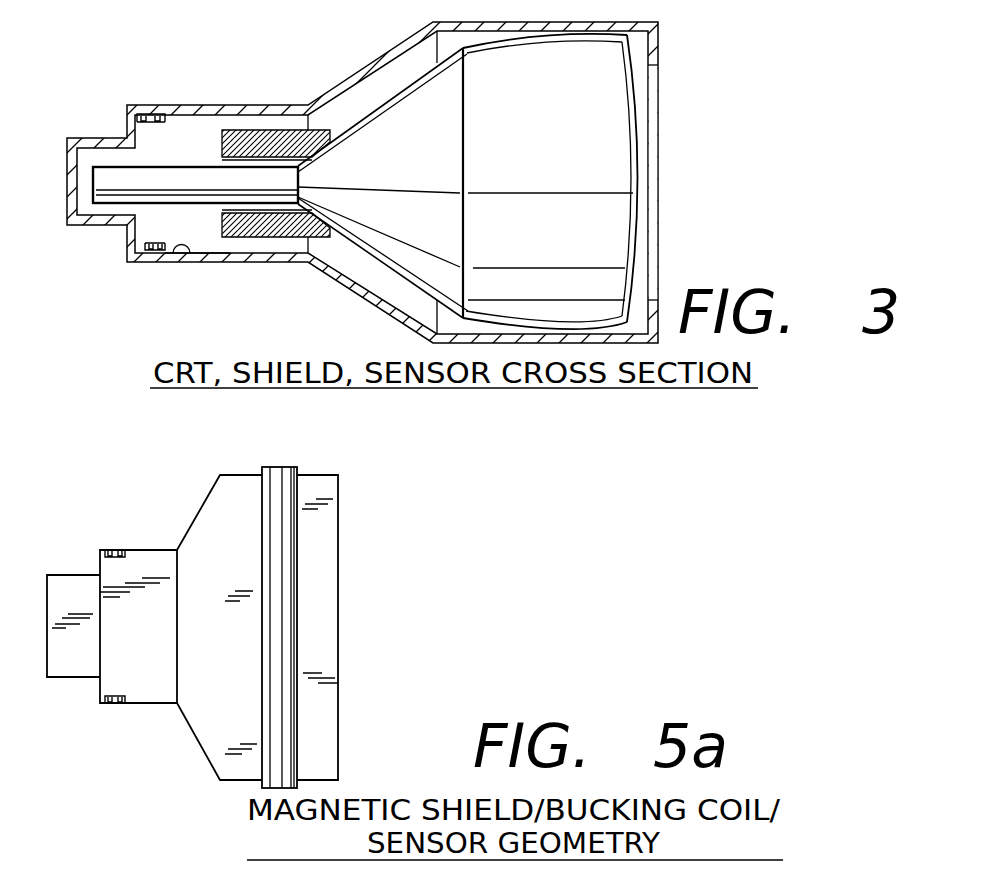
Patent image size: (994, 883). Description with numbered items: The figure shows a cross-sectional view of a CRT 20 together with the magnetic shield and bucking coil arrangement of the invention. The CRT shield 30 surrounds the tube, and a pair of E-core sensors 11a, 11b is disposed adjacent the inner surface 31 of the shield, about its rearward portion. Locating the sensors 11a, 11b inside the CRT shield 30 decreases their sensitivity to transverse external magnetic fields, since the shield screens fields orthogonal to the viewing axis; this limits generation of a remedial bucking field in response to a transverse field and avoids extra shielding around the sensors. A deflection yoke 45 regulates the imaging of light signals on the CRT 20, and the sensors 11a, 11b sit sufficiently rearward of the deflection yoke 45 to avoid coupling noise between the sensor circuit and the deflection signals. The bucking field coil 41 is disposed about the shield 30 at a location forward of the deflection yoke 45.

In FIG. 3, the sensor 11a is at (137, 118).
In FIG. 5a, the sensor 11a is at (113, 550).
In FIG. 3, the sensor 11b is at (130, 249).
In FIG. 5a, the sensor 11b is at (113, 704).
In FIG. 3, the CRT 20 is at (426, 299).
In FIG. 3, the CRT shield 30 is at (336, 88).
In FIG. 5a, the CRT shield 30 is at (187, 737).
In FIG. 3, the inner surface 31 is at (196, 254).
In FIG. 5a, the bucking field coil 41 is at (280, 467).
In FIG. 3, the deflection yoke 45 is at (250, 238).